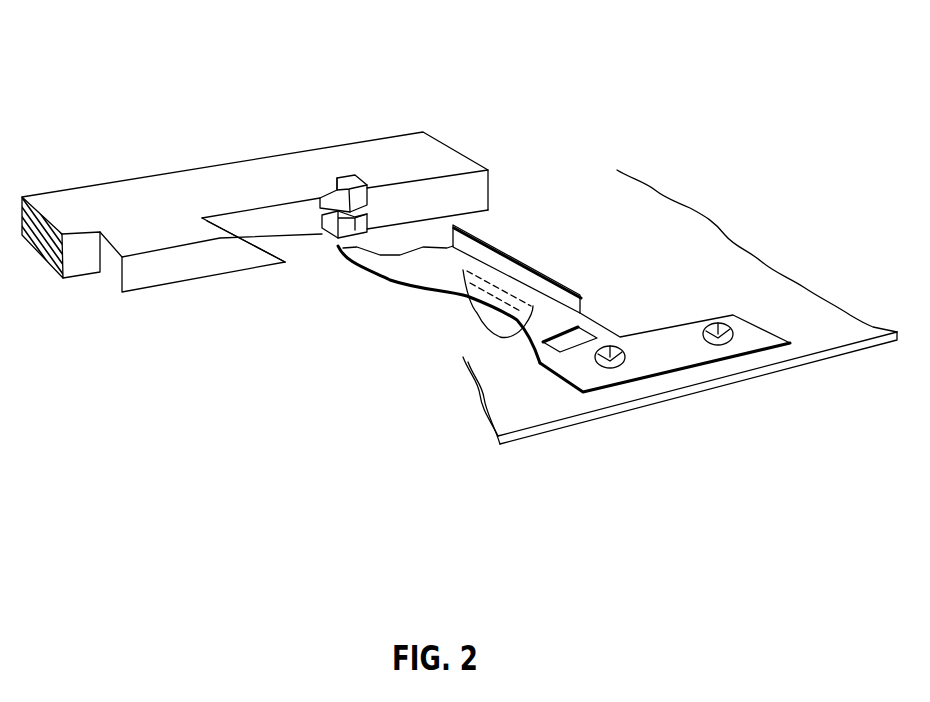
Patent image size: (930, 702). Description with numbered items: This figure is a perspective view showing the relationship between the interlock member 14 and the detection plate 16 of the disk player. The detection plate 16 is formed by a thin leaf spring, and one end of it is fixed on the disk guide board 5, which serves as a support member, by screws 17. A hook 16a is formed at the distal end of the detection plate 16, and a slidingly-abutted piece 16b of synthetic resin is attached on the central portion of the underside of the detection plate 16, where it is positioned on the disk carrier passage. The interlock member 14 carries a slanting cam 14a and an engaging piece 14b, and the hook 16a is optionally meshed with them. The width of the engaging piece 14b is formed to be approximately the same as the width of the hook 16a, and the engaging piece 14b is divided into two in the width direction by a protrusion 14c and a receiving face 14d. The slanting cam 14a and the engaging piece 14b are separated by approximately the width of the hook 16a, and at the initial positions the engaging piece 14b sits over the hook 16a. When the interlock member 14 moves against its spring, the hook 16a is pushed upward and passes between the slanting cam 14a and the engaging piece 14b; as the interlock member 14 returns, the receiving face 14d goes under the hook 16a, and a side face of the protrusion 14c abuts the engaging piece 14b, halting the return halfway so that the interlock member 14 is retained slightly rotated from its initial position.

The disk guide board 5 is at (803, 367).
The interlock member 14 is at (143, 177).
The slanting cam 14a is at (232, 237).
The engaging piece 14b is at (386, 139).
The protrusion 14c is at (352, 212).
The receiving face 14d is at (338, 181).
The detection plate 16 is at (553, 272).
The hook 16a is at (338, 252).
The slidingly-abutted piece 16b is at (460, 328).
The screws 17 is at (618, 348).